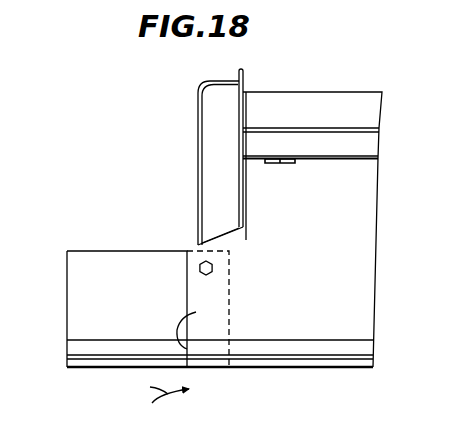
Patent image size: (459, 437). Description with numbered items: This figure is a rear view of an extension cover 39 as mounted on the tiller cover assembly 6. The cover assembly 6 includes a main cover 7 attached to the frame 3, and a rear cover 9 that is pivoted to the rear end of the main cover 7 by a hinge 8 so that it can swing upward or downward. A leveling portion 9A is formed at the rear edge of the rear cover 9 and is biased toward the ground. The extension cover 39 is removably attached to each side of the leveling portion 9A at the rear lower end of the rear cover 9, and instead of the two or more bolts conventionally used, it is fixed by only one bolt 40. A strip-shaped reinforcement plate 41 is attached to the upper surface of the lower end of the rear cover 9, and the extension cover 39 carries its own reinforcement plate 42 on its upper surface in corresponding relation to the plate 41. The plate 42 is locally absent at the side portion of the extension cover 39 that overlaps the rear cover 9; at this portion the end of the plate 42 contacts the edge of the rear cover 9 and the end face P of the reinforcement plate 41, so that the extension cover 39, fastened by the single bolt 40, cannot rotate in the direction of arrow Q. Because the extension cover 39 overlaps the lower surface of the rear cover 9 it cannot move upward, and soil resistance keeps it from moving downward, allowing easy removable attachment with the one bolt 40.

The frame 3 is at (206, 157).
The tiller cover assembly 6 is at (344, 124).
The main cover 7 is at (309, 142).
The hinge 8 is at (291, 164).
The rear cover 9 is at (263, 202).
The leveling portion 9A is at (264, 368).
The extension cover 39 is at (100, 263).
The bolt 40 is at (204, 261).
The reinforcement plate 41 is at (262, 345).
The reinforcement plate 42 is at (121, 346).
The end face P is at (196, 321).
The direction of arrow Q is at (164, 407).